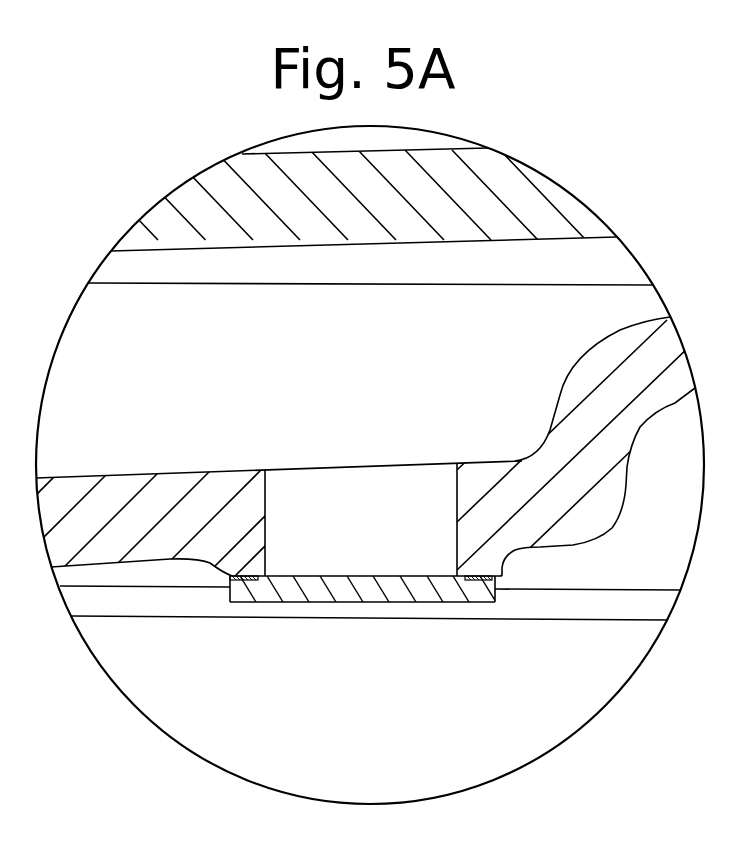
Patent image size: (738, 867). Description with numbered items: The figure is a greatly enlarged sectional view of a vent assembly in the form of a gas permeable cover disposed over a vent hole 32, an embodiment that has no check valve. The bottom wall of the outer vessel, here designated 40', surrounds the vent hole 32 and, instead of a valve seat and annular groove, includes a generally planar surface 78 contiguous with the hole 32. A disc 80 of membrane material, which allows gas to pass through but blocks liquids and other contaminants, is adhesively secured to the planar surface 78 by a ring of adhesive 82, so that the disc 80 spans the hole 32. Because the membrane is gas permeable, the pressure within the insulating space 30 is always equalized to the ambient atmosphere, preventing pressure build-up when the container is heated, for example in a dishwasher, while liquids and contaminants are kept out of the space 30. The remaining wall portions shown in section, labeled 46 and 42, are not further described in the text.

The insulating space 30 is at (136, 348).
The upper wall portion 46 is at (378, 203).
The bottom wall of the outer vessel 40' is at (170, 488).
The vent hole 32 is at (305, 470).
The flange portion 42 is at (581, 405).
The planar surface 78 is at (243, 576).
The disc 80 is at (452, 593).
The ring of adhesive 82 is at (230, 587).